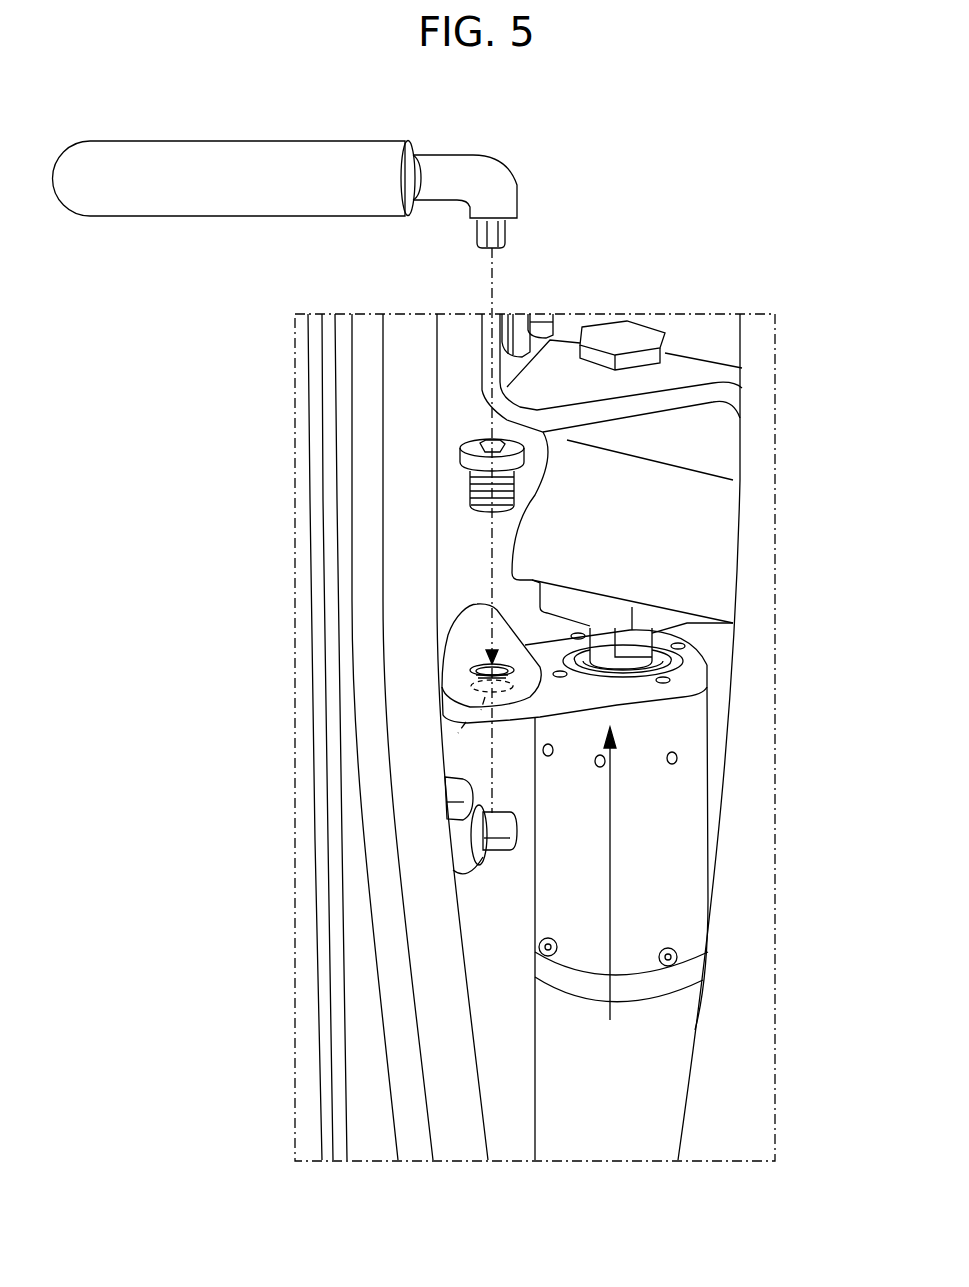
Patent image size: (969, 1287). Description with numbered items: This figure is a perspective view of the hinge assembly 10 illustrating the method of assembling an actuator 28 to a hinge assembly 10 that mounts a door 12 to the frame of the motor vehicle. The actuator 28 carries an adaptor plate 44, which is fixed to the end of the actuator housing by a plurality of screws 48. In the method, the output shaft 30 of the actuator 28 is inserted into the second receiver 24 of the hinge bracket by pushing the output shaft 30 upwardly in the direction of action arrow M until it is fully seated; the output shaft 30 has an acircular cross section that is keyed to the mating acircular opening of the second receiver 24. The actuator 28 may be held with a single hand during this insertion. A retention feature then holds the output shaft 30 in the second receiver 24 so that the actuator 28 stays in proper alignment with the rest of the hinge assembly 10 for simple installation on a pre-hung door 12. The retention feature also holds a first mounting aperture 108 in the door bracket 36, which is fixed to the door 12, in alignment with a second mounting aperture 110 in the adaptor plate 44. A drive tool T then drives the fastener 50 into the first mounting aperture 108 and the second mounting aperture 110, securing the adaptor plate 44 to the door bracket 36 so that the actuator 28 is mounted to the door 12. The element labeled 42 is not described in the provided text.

The drive tool T is at (190, 153).
The hinge assembly 10 is at (737, 298).
The door 12 is at (482, 932).
The fastener 50 is at (467, 490).
The second receiver 24 is at (662, 583).
The output shaft 30 is at (603, 647).
The screws 48 is at (682, 643).
The first mounting aperture 108 is at (447, 632).
The door bracket 36 is at (450, 655).
The second mounting aperture 110 is at (482, 700).
The adaptor plate 44 is at (567, 688).
The motor housing 42 is at (710, 785).
The action arrow M is at (612, 842).
The actuator 28 is at (673, 915).